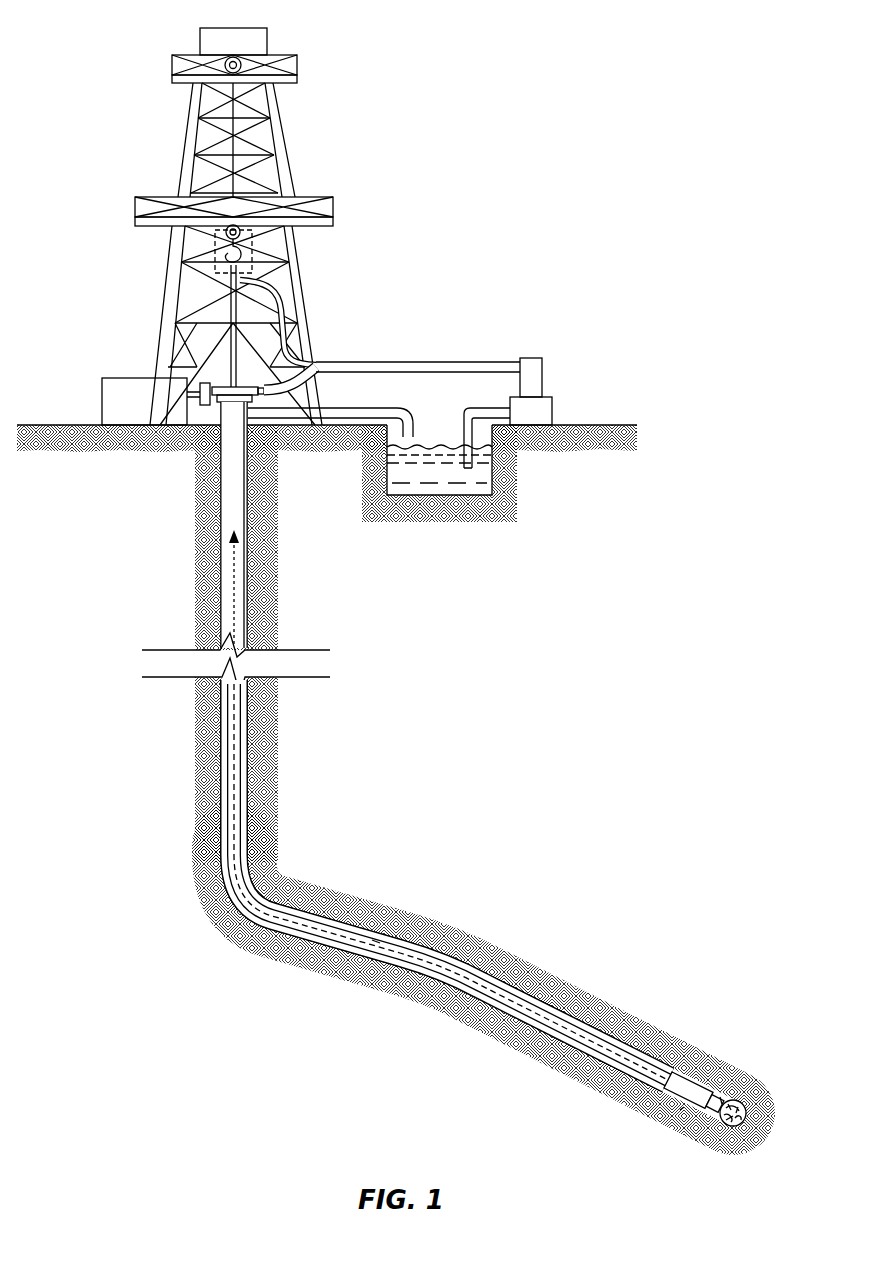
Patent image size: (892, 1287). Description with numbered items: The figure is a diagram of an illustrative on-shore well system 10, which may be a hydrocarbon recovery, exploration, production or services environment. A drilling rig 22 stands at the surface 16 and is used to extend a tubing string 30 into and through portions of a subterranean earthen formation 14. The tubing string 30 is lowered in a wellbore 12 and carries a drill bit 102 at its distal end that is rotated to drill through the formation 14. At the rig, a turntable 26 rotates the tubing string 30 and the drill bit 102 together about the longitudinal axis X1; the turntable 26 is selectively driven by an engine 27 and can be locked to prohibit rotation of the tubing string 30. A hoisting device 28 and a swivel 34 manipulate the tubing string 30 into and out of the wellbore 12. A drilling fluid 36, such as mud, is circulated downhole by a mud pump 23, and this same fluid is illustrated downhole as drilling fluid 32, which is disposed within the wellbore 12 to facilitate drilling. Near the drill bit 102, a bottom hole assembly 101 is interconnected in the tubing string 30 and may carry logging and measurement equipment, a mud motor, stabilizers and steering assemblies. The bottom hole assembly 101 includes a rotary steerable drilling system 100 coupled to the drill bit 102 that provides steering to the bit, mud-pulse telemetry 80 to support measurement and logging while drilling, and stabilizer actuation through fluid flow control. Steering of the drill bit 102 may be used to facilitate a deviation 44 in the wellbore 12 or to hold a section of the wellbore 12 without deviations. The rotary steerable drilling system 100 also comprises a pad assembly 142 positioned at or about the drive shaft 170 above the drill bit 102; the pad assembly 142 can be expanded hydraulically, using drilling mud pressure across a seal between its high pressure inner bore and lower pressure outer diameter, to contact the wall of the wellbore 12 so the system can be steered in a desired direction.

The well system 10 is at (404, 599).
The drilling rig 22 is at (184, 142).
The hoisting device 28 is at (180, 250).
The swivel 34 is at (225, 315).
The turntable 26 is at (270, 390).
The engine 27 is at (102, 395).
The mud pump 23 is at (542, 378).
The surface 16 is at (607, 425).
The drilling fluid 36 is at (427, 447).
The subterranean earthen formation 14 is at (440, 521).
The wellbore 12 is at (250, 722).
The deviation 44 is at (255, 856).
The drilling fluid 32 is at (313, 905).
The tubing string 30 is at (447, 956).
The mud-pulse telemetry 80 is at (410, 947).
The longitudinal axis X1 is at (376, 937).
The rotary steerable drilling system 100 is at (687, 1072).
The drive shaft 170 is at (713, 1093).
The drill bit 102 is at (722, 1093).
The bottom hole assembly 101 is at (679, 1114).
The pad assembly 142 is at (702, 1113).